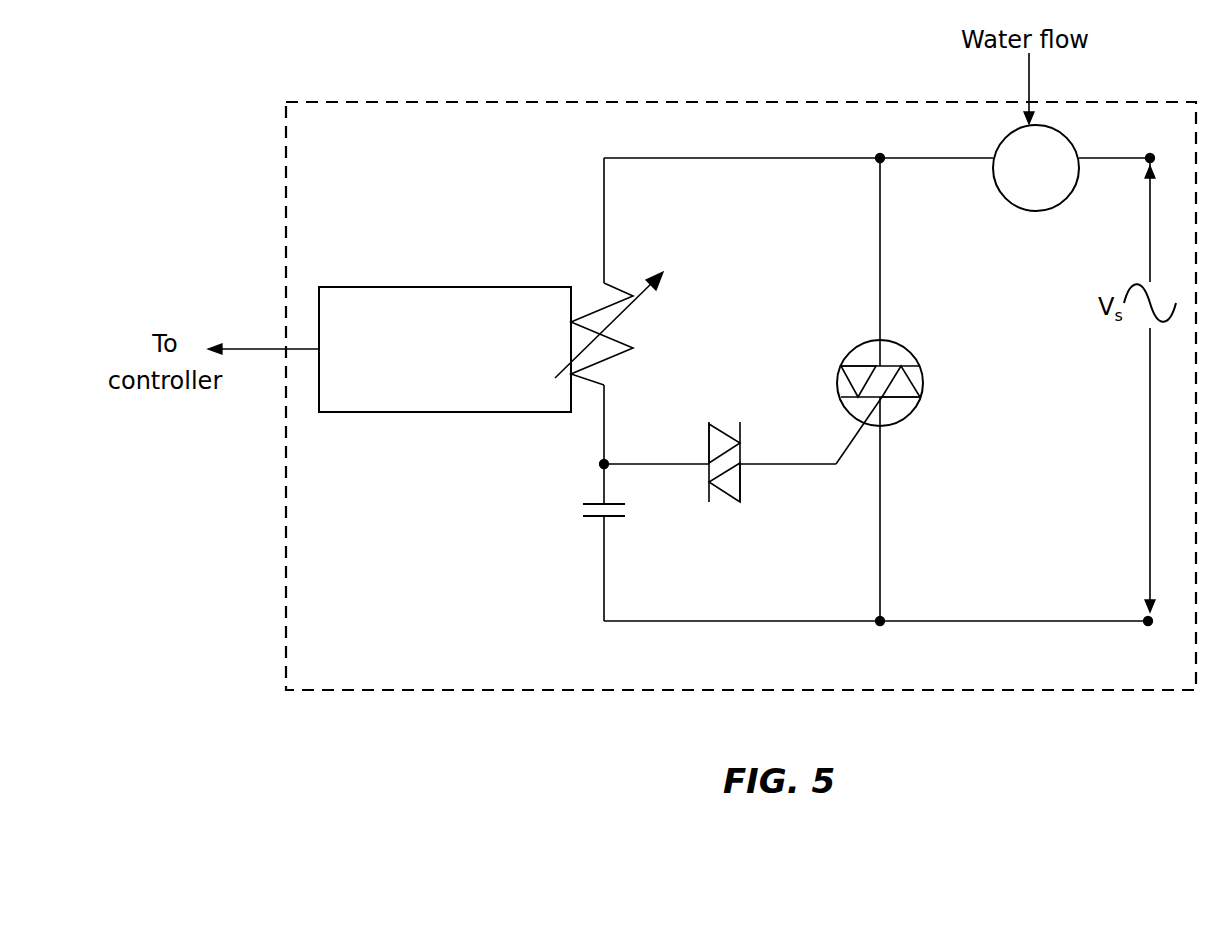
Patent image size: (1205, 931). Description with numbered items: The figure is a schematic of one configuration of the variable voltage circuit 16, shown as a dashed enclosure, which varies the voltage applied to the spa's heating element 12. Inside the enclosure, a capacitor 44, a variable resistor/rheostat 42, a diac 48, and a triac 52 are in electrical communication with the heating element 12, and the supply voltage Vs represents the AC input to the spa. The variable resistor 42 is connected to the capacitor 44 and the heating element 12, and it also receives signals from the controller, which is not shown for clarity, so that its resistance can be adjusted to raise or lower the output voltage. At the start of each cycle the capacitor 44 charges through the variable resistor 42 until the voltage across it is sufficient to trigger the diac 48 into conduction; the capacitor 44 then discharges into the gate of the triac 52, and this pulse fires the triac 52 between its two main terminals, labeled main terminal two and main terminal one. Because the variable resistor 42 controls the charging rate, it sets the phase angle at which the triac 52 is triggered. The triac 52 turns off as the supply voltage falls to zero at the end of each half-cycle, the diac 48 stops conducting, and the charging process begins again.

The heating element 12 is at (1036, 168).
The variable voltage circuit 16 is at (741, 396).
The variable resistor/rheostat 42 is at (435, 342).
The capacitor 44 is at (507, 514).
The diac 48 is at (725, 506).
The triac 52 is at (886, 392).